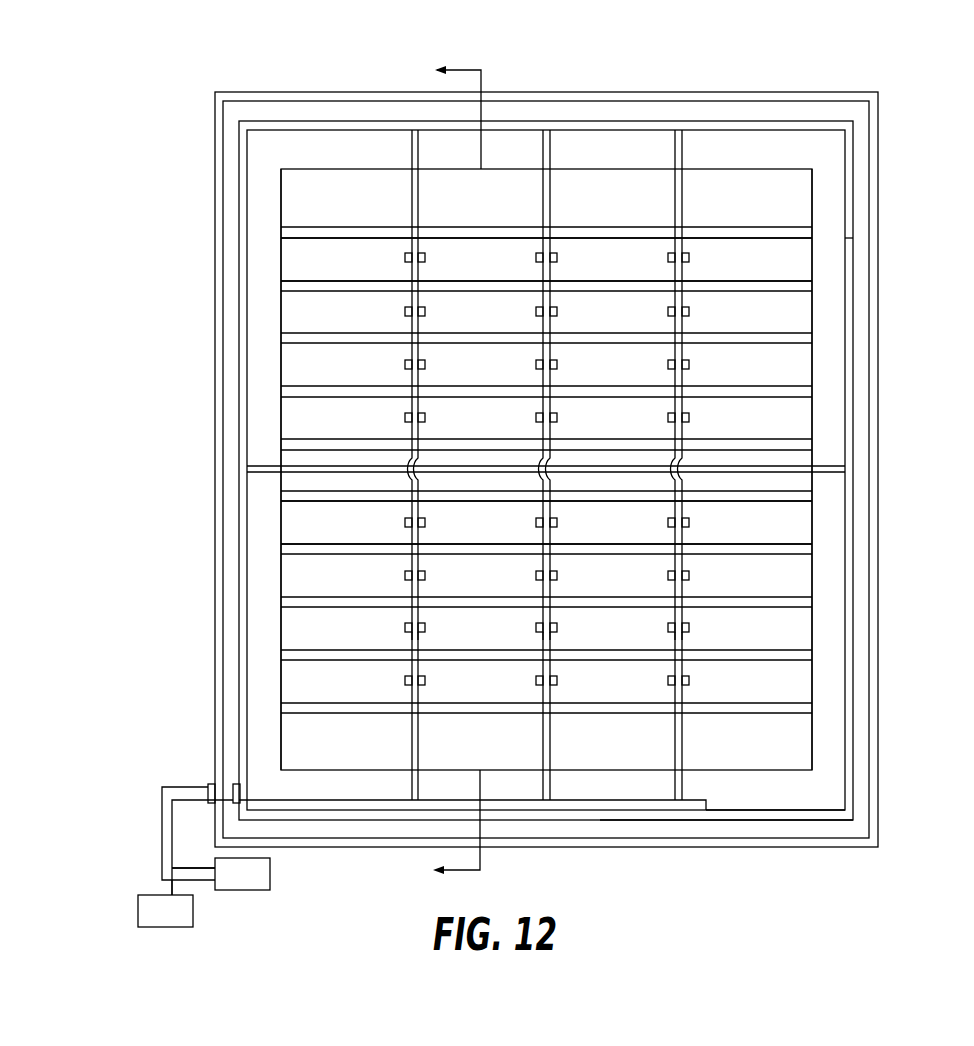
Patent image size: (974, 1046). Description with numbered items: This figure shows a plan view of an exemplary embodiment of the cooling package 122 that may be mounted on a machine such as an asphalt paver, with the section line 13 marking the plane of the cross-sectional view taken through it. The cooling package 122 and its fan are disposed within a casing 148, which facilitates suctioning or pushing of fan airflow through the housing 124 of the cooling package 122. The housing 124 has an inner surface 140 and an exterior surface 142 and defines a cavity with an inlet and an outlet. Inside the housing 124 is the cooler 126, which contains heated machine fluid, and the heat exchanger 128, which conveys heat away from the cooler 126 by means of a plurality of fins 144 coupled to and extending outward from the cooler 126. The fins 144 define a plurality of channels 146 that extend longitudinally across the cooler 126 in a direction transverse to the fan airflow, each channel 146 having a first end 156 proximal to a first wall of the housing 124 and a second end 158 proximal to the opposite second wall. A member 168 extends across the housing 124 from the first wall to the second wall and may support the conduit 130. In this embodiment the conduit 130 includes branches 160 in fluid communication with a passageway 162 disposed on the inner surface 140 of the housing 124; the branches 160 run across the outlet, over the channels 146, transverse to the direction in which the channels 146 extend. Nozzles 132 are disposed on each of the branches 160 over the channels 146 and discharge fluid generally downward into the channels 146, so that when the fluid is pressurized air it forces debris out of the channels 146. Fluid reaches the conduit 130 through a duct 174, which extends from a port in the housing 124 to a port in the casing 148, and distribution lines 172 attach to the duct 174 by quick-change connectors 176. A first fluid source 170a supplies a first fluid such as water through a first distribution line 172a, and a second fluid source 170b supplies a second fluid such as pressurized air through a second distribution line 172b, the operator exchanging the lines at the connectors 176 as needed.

The section line 13- 13 is at (444, 471).
The cooling package 122 is at (724, 108).
The housing 124 is at (795, 127).
The cooler 126 is at (793, 742).
The heat exchanger 128 is at (808, 221).
The conduit 130 is at (409, 163).
The nozzles 132 is at (406, 254).
The inner surface 140 is at (792, 806).
The exterior surface 142 is at (687, 818).
The fins 144 is at (313, 338).
The channels 146 is at (313, 265).
The casing 148 is at (592, 92).
The first end 156 is at (280, 675).
The second end 158 is at (813, 680).
The branches 160 is at (411, 638).
The passageway 162 is at (613, 802).
The member 168 is at (845, 469).
The first fluid source 170a is at (264, 887).
The second fluid source 170b is at (187, 924).
The distribution lines 172 is at (163, 843).
The first distribution line 172a is at (193, 881).
The second distribution line 172b is at (166, 888).
The duct 174 is at (235, 784).
The connectors 176 is at (211, 784).